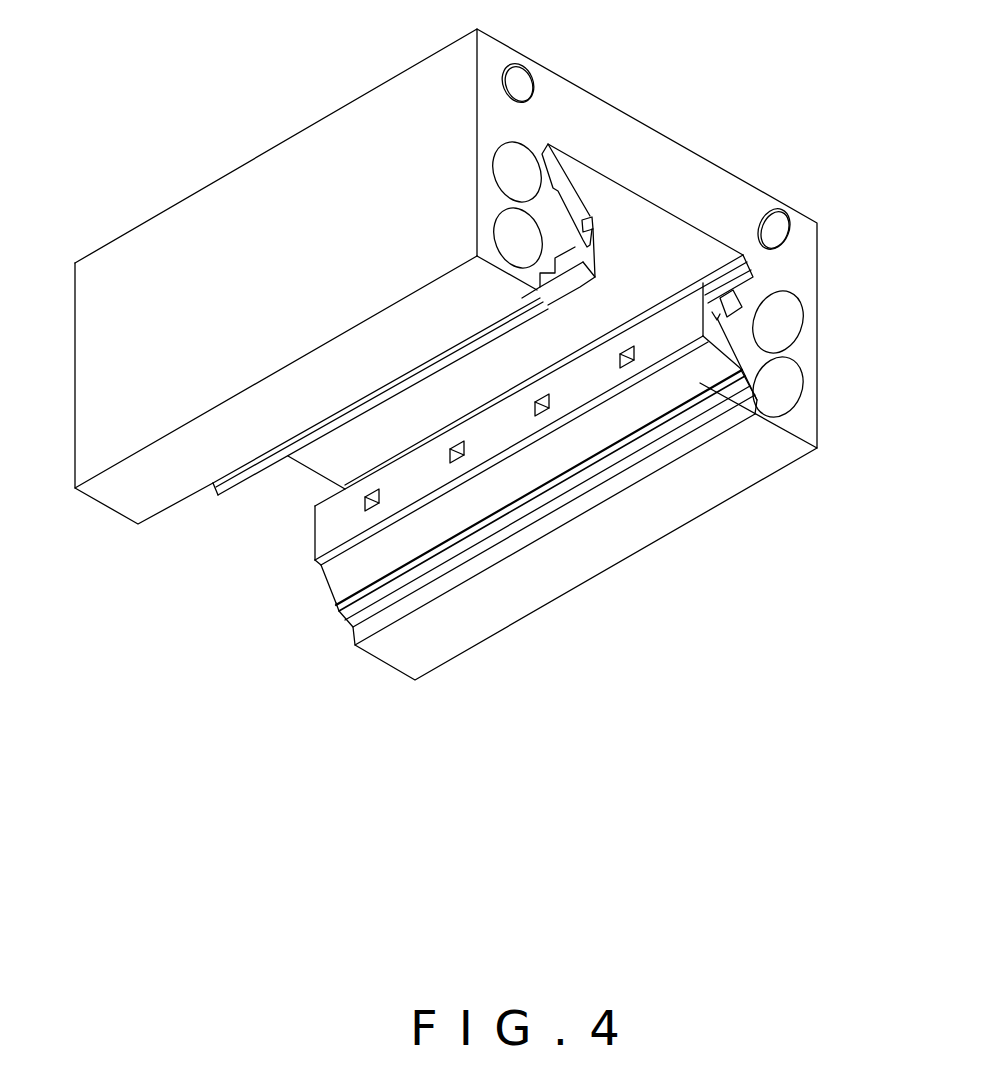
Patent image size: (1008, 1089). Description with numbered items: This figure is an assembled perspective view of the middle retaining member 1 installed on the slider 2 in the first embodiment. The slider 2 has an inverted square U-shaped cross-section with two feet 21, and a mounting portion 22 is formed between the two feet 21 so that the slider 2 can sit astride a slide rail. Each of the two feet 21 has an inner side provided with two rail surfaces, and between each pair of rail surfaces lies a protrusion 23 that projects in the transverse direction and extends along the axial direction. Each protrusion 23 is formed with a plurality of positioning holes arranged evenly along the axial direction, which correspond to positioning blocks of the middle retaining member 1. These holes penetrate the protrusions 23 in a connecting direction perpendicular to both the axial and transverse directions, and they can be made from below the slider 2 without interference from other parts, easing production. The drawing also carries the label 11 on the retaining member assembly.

The middle retaining member 1 is at (588, 247).
The engaging end portion of slide rail 11 is at (597, 247).
The slider 2 is at (467, 266).
The feet 21 is at (493, 193).
The mounting portion 22 is at (653, 218).
The protrusion 23 is at (583, 241).